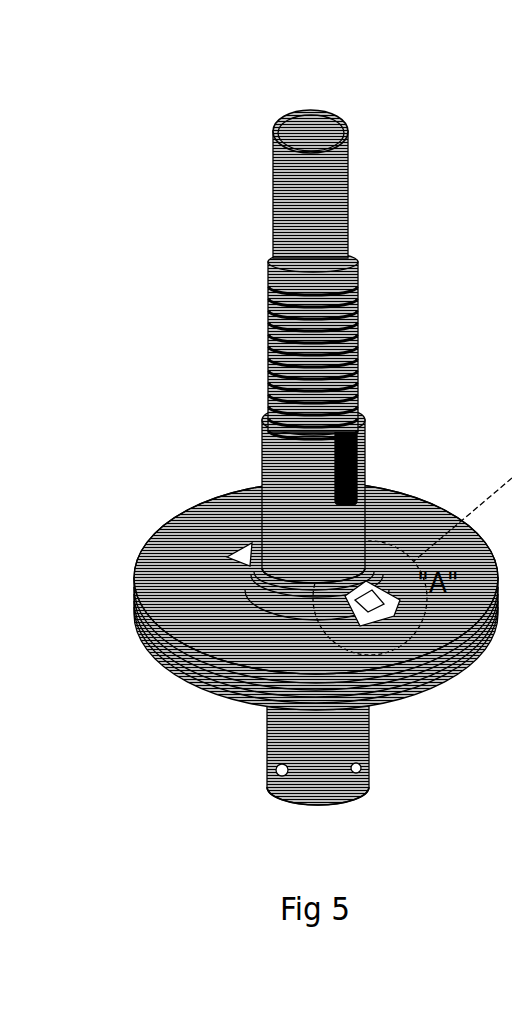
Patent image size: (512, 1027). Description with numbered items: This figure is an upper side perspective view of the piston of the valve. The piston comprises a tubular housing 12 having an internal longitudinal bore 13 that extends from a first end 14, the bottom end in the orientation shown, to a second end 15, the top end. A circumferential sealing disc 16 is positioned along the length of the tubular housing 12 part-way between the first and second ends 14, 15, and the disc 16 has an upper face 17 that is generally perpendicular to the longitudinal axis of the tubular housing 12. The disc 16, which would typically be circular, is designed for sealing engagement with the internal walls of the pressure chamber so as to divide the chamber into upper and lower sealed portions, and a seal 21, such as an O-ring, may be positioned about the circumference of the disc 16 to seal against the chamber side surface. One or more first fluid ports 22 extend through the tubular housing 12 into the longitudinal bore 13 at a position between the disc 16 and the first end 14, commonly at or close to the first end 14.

The tubular housing 12 is at (268, 372).
The internal longitudinal bore 13 is at (311, 133).
The first end 14 is at (267, 786).
The second end 15 is at (273, 128).
The circumferential sealing disc 16 is at (132, 587).
The upper face 17 is at (158, 566).
The seal 21 is at (152, 658).
The first fluid ports 22 is at (372, 772).